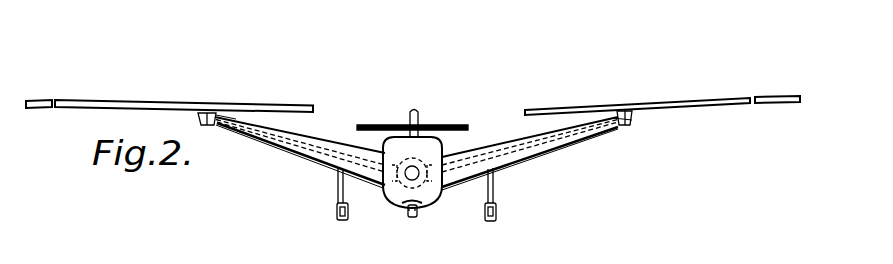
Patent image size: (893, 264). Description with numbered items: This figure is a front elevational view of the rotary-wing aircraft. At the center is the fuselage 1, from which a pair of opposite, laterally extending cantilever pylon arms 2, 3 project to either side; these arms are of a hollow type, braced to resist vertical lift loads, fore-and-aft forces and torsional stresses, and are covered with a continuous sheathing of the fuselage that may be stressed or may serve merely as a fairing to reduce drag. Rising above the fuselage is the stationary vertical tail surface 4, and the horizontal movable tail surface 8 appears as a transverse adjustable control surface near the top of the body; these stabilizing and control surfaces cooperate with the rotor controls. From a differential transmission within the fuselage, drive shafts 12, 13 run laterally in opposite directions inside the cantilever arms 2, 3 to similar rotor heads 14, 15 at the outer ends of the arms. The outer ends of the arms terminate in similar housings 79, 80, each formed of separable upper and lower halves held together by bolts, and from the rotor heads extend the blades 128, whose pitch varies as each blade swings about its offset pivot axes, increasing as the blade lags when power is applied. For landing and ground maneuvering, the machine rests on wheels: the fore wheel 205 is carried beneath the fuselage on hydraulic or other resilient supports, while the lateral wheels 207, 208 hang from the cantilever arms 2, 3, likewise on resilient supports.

The fuselage 1 is at (442, 155).
The cantilever pylon arm 2 is at (298, 138).
The cantilever pylon arm 3 is at (525, 147).
The stationary vertical tail surface 4 is at (414, 108).
The horizontal movable tail surface 8 is at (430, 125).
The drive shaft 12 is at (313, 155).
The drive shaft 13 is at (563, 146).
The rotor head 14 is at (207, 125).
The rotor head 15 is at (627, 126).
The housing 79 is at (631, 118).
The housing 80 is at (251, 124).
The blade 128 is at (103, 101).
The fore wheel 205 is at (412, 217).
The lateral wheel 207 is at (342, 220).
The lateral wheel 208 is at (490, 221).